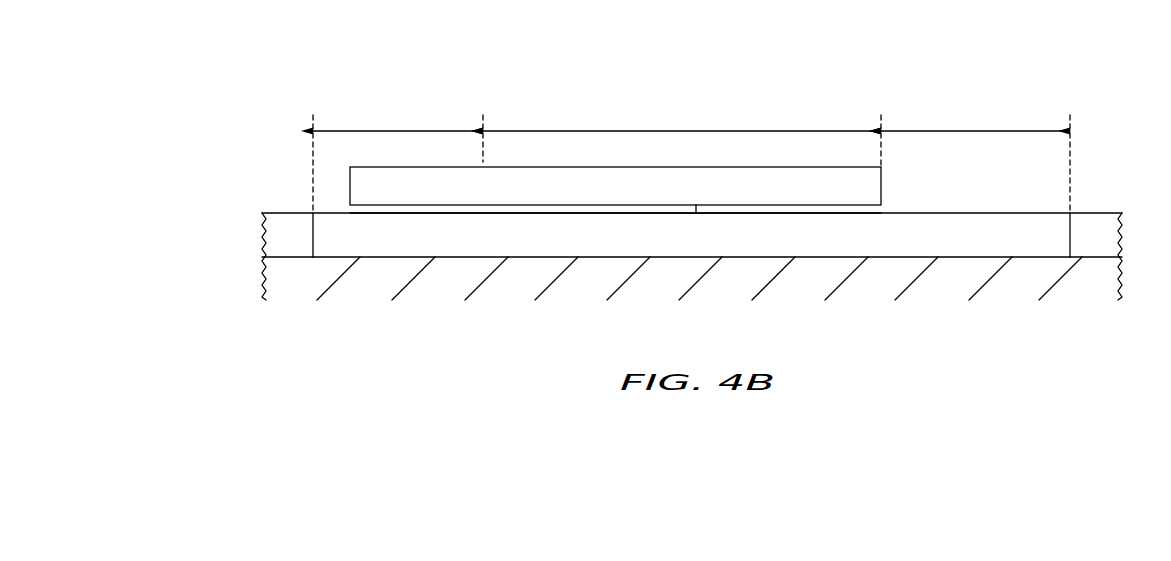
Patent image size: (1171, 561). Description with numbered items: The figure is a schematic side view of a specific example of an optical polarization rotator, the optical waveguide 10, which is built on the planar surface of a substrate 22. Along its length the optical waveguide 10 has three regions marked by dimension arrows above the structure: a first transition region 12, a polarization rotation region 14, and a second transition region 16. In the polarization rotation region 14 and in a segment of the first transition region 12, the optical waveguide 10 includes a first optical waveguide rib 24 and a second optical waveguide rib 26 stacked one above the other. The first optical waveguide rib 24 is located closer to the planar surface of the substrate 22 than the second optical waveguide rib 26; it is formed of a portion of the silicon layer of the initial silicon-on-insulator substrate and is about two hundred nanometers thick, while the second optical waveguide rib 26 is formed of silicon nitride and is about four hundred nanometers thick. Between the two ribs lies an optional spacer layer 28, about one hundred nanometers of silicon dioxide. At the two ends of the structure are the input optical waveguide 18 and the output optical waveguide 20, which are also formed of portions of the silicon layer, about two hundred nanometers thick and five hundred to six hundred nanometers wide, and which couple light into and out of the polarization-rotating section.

The optical waveguide 10 is at (643, 39).
The first transition region 12 is at (403, 127).
The polarization rotation region 14 is at (686, 130).
The second transition region 16 is at (978, 128).
The input optical waveguide 18 is at (288, 210).
The output optical waveguide 20 is at (1101, 212).
The substrate 22 is at (722, 291).
The first optical waveguide rib 24 is at (951, 240).
The second optical waveguide rib 26 is at (881, 187).
The spacer layer 28 is at (449, 213).